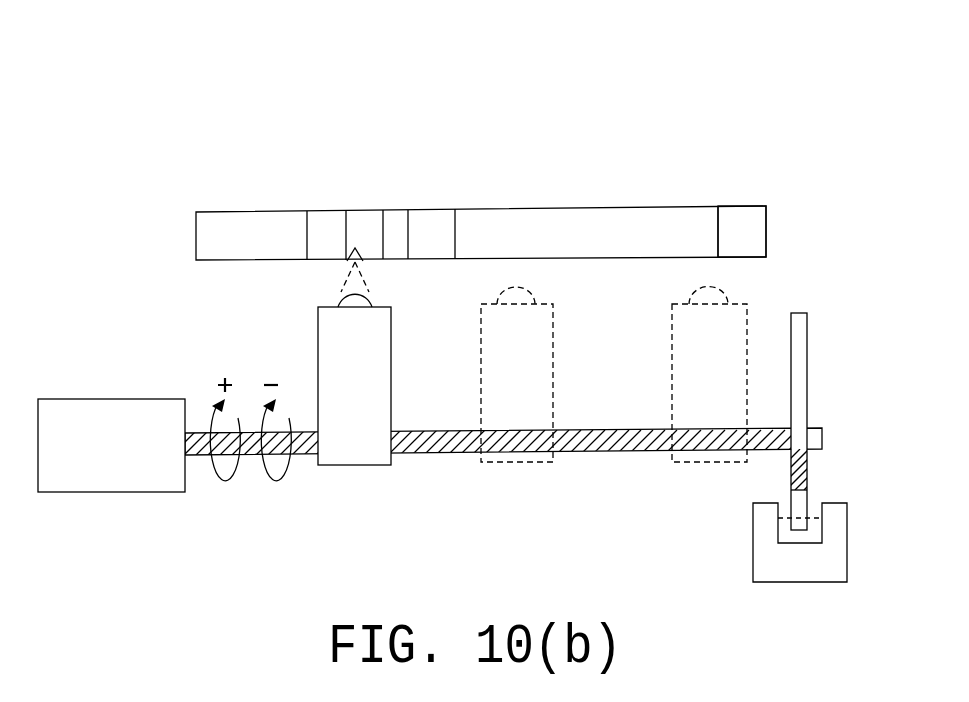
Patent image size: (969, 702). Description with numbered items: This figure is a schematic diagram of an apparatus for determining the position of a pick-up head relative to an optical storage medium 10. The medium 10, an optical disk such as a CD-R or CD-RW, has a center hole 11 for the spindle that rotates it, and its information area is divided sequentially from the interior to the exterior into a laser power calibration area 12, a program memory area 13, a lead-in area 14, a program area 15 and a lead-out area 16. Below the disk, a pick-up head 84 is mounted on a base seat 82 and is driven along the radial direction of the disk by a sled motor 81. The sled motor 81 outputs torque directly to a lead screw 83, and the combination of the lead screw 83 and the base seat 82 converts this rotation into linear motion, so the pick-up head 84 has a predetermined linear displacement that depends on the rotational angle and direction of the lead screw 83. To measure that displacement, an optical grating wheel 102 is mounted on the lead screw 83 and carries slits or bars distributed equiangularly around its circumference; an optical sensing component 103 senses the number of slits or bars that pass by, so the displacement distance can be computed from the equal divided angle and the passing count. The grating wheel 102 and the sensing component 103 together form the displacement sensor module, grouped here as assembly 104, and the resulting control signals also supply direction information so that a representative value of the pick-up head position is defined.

The optical storage medium 10 is at (677, 116).
The center hole 11 is at (253, 202).
The laser power calibration area 12 is at (360, 218).
The program memory area 13 is at (396, 218).
The lead-in area 14 is at (432, 218).
The program area 15 is at (583, 215).
The lead-out area 16 is at (737, 215).
The sled motor 81 is at (115, 484).
The base seat 82 is at (358, 458).
The lead screw 83 is at (445, 444).
The pick-up head 84 is at (340, 294).
The optical grating wheel 102 is at (799, 313).
The optical sensing component 103 is at (769, 553).
The support assembly 104 is at (628, 480).